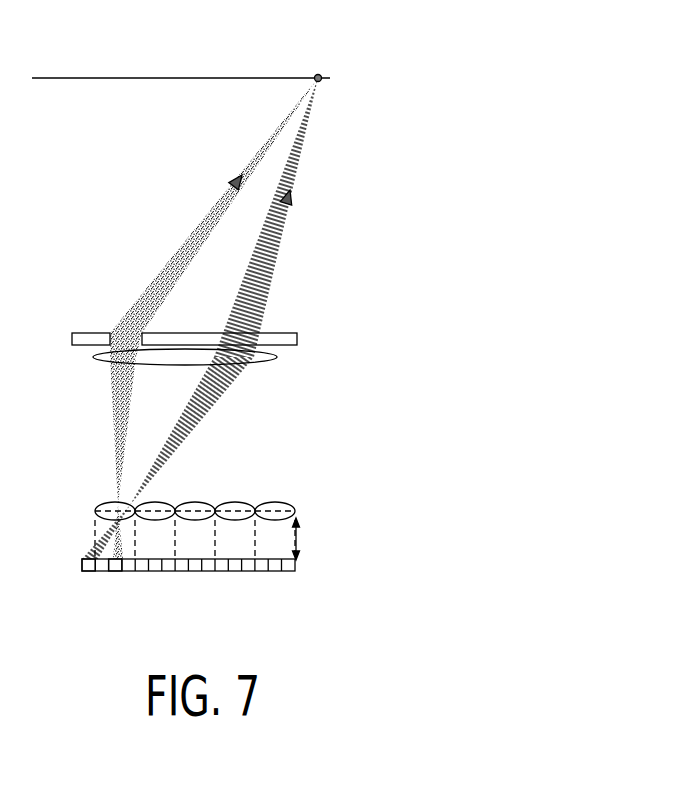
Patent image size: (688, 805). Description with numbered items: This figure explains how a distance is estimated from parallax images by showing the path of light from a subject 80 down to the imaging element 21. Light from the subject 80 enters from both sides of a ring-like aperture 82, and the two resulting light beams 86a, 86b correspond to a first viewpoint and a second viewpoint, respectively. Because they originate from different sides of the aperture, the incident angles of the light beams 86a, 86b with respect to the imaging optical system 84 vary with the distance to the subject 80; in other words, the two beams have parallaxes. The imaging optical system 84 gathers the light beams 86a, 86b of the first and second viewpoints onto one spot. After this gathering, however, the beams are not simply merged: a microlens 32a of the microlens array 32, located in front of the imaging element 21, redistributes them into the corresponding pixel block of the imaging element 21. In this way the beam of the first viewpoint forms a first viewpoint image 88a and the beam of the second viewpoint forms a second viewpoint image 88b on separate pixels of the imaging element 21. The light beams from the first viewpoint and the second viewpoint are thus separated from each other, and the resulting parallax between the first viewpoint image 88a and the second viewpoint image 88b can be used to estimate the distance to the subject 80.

The subject 80 is at (320, 72).
The light beam from first viewpoint 86a is at (172, 265).
The light beam from second viewpoint 86b is at (278, 248).
The ring-like aperture 82 is at (237, 336).
The imaging optical system 84 is at (268, 361).
The microlens array 32 is at (270, 503).
The microlens 32a is at (107, 505).
The imaging element 21 is at (297, 565).
The first viewpoint image 88a is at (116, 572).
The second viewpoint image 88b is at (88, 572).